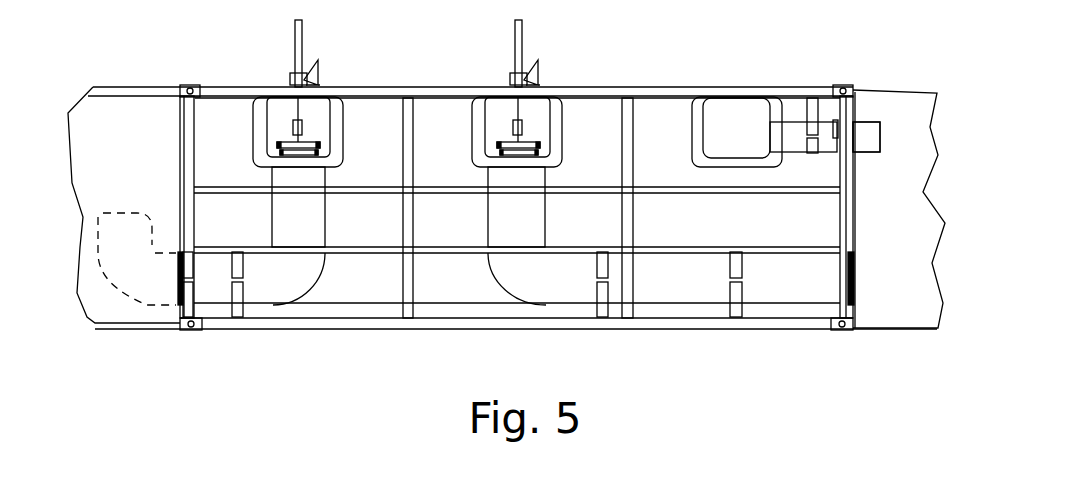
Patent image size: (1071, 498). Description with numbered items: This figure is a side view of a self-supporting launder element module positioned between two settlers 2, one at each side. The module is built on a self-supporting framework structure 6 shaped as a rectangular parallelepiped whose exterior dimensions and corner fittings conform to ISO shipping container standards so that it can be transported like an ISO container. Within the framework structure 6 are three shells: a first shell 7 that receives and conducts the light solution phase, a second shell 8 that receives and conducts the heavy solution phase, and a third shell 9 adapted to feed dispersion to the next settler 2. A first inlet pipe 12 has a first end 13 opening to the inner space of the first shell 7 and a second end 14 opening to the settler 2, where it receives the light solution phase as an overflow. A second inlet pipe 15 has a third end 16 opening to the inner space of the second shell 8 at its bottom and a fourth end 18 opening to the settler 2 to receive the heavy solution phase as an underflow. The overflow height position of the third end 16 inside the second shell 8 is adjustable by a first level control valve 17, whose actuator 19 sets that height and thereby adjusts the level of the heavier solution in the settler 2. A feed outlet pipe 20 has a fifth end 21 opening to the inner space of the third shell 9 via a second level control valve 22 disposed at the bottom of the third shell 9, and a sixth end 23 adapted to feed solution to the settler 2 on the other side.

The settler 2 is at (100, 104).
The framework structure 6 is at (391, 93).
The first shell 7 is at (697, 115).
The second shell 8 is at (483, 118).
The third shell 9 is at (258, 106).
The first inlet pipe 12 is at (861, 148).
The first end 13 is at (779, 119).
The second end 14 is at (878, 120).
The second inlet pipe 15 is at (547, 277).
The third end 16 is at (541, 149).
The first level control valve 17 is at (536, 145).
The fourth end 18 is at (858, 313).
The actuator 19 is at (521, 118).
The feed outlet pipe 20 is at (307, 277).
The fifth end 21 is at (315, 150).
The second level control valve 22 is at (305, 143).
The sixth end 23 is at (173, 314).